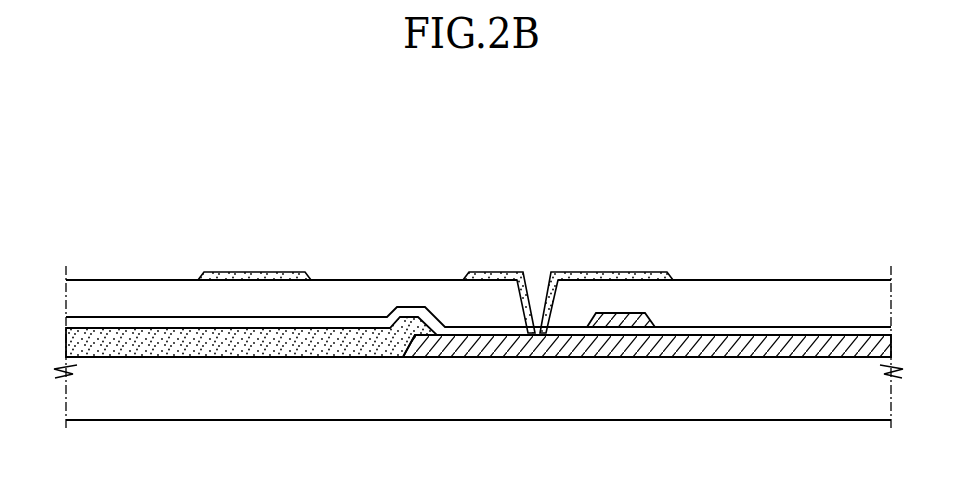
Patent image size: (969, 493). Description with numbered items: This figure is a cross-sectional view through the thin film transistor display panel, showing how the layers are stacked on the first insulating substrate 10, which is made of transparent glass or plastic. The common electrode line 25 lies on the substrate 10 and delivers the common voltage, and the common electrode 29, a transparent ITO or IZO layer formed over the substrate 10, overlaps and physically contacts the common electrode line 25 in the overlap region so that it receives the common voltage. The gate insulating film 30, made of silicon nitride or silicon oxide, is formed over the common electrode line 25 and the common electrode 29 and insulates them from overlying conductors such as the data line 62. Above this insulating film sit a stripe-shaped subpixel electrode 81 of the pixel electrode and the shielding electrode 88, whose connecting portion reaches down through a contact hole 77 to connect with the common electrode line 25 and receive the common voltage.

The first insulating substrate 10 is at (239, 383).
The common electrode line 25 is at (555, 345).
The common electrode 29 is at (168, 345).
The gate insulating film 30 is at (113, 323).
The data line 62 is at (629, 316).
The contact hole 77 is at (546, 247).
The subpixel electrode 81 is at (285, 275).
The shielding electrode 88 is at (657, 283).